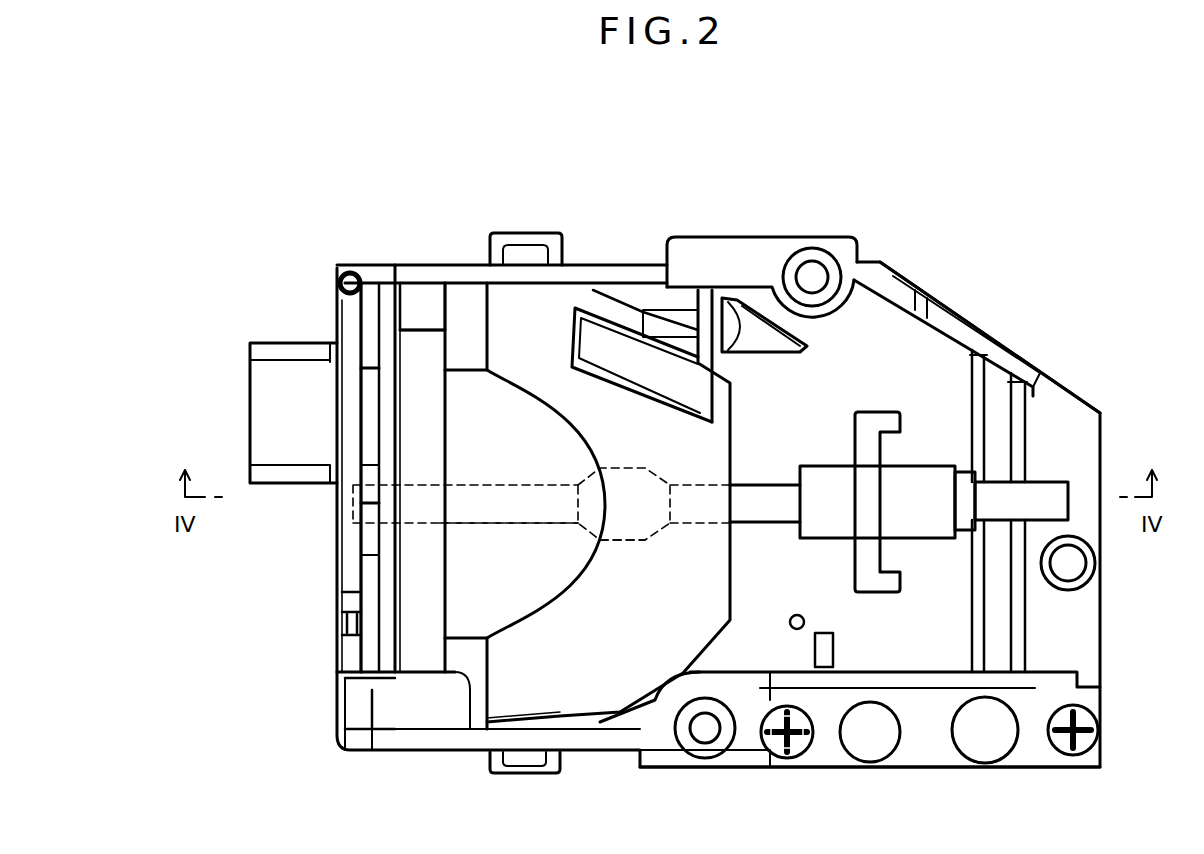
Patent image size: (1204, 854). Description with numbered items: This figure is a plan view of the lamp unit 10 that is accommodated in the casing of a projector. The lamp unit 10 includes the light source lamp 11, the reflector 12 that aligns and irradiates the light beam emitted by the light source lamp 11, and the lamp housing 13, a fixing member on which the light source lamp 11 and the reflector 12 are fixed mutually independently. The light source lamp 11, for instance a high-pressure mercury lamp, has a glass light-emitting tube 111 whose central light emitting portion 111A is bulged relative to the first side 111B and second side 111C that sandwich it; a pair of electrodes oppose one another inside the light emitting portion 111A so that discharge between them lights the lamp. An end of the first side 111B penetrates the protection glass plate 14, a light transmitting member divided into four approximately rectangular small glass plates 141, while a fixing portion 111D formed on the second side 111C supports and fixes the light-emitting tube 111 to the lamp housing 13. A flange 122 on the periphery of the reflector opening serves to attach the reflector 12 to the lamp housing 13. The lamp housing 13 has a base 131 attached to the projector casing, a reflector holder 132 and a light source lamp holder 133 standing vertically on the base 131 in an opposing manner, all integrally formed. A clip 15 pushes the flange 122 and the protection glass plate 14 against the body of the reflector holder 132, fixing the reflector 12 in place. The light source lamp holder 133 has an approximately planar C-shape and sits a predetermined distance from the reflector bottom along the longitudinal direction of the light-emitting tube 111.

The lamp unit 10 is at (907, 250).
The light source lamp 11 is at (625, 460).
The reflector 12 is at (545, 320).
The lamp housing 13 is at (1064, 372).
The protection glass plate 14 is at (370, 322).
The clip 15 is at (357, 718).
The light-emitting tube 111 is at (690, 525).
The light emitting portion 111A is at (622, 543).
The first side 111B is at (490, 525).
The second side 111C is at (767, 497).
The fixing portion 111D is at (820, 527).
The flange 122 is at (424, 318).
The base 131 is at (948, 617).
The reflector holder 132 is at (345, 648).
The light source lamp holder 133 is at (878, 420).
The small glass plates 141 is at (370, 555).